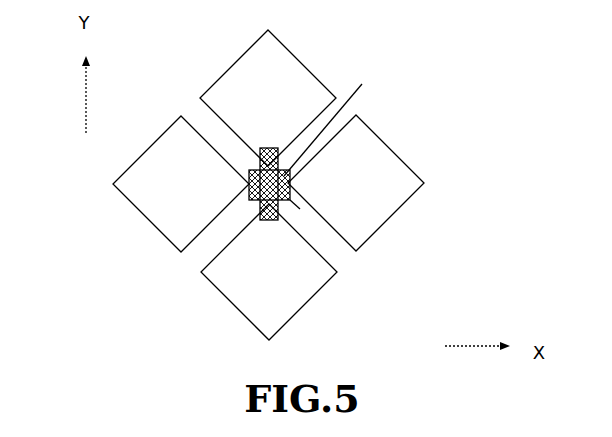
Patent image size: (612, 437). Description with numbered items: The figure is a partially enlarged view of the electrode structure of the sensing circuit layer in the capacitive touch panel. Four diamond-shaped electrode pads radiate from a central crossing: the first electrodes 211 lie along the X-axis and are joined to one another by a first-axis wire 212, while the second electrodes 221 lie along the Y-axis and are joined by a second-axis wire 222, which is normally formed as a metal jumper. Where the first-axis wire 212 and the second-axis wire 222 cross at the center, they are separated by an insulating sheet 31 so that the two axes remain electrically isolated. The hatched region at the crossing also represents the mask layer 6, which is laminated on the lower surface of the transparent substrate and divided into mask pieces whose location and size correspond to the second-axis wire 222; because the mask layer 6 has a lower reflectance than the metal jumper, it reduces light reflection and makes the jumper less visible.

The mask layer 6 is at (272, 137).
The second-axis wire 222 is at (290, 171).
The first electrode 211 is at (358, 199).
The first-axis wire 212 is at (247, 184).
The second electrode 221 is at (262, 291).
The insulating sheet 31 is at (300, 209).